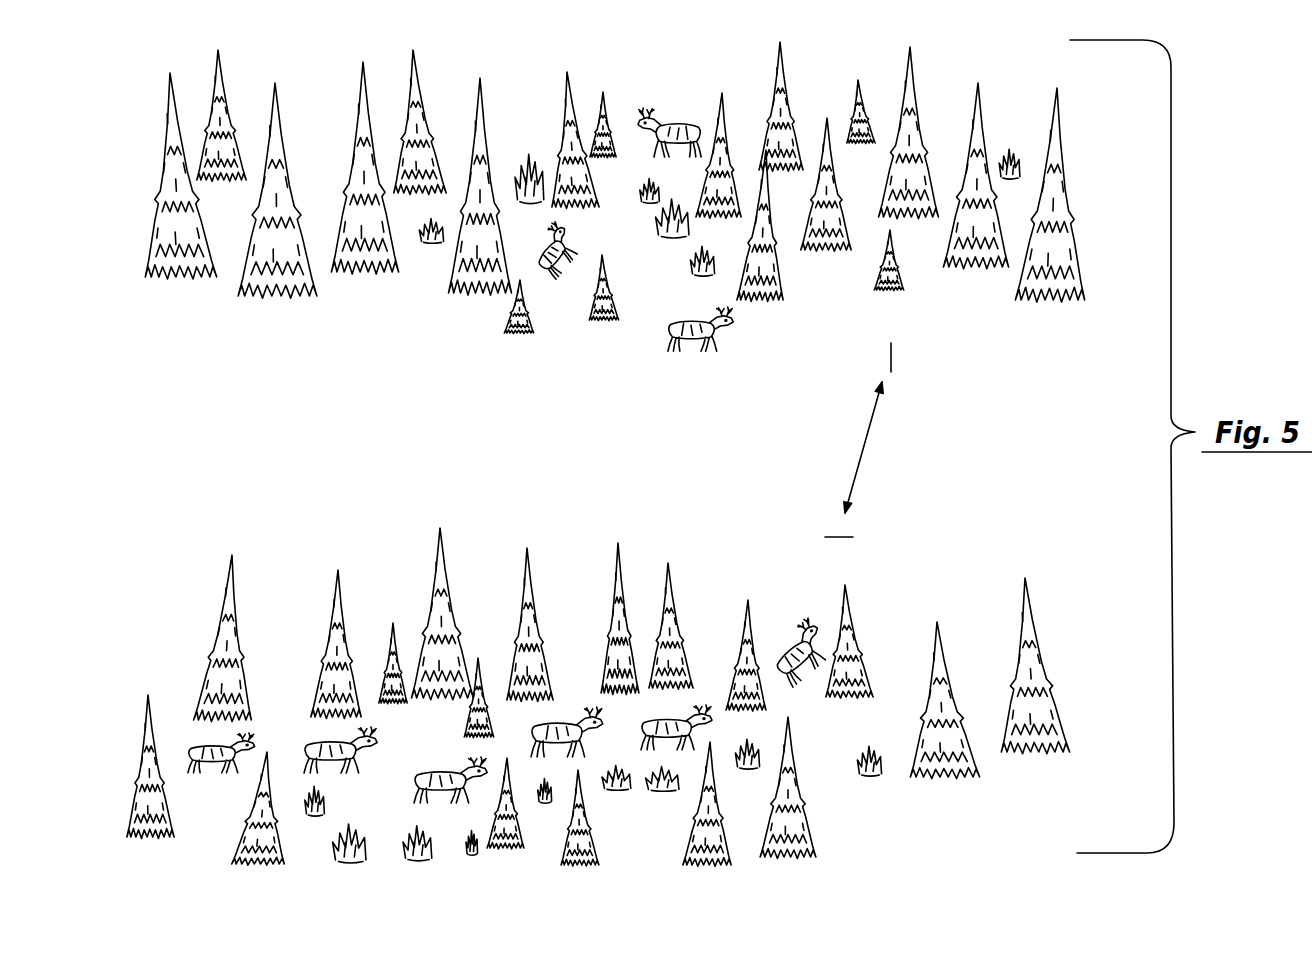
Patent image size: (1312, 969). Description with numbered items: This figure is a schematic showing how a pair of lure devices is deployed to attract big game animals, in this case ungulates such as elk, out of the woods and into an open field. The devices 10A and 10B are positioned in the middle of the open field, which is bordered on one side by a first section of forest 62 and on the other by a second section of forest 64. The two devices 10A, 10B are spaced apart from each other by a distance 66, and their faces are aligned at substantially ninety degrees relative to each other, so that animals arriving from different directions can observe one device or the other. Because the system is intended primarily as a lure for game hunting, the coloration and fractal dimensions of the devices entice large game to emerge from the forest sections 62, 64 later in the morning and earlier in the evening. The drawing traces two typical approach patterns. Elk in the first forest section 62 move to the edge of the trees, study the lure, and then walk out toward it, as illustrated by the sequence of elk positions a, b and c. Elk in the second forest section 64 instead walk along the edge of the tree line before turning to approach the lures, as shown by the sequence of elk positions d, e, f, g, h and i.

The first section of forest 62 is at (1075, 132).
The second section of forest 64 is at (1059, 669).
The distance 66 is at (868, 443).
The device 10A is at (893, 357).
The device 10B is at (825, 537).
The elk position a is at (677, 127).
The elk position b is at (568, 240).
The elk position c is at (692, 317).
The elk position d is at (200, 742).
The elk position e is at (317, 743).
The elk position f is at (442, 773).
The elk position g is at (560, 727).
The elk position h is at (675, 720).
The elk position i is at (793, 647).